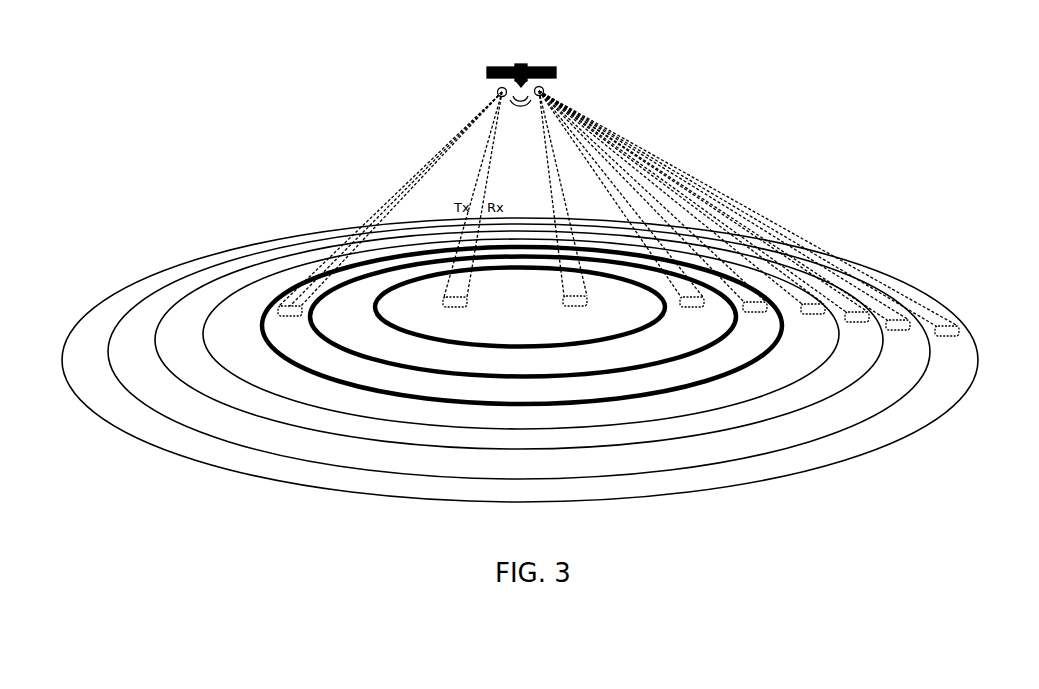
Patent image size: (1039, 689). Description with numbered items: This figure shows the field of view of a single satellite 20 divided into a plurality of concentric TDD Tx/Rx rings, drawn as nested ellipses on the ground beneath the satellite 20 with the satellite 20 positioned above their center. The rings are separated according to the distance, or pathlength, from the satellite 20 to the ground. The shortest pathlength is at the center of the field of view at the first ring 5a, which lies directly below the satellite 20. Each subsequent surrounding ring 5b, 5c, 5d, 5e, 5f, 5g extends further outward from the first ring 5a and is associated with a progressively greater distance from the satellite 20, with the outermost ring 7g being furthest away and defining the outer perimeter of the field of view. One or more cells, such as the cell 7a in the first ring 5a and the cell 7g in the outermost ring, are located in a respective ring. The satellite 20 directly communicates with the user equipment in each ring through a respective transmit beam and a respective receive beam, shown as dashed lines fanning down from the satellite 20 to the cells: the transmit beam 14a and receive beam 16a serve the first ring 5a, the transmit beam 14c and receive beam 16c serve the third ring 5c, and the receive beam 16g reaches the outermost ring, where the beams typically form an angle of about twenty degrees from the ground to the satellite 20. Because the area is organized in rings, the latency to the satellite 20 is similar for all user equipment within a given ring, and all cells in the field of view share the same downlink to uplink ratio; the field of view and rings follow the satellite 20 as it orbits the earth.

The satellite 20 is at (494, 62).
The first ring 5a is at (450, 337).
The second ring 5b is at (393, 362).
The third ring 5c is at (313, 372).
The fourth ring 5d is at (202, 335).
The fifth ring 5e is at (278, 250).
The sixth ring 5f is at (155, 295).
The seventh ring 5g is at (220, 255).
The cell 7a is at (468, 300).
The outermost ring cell 7g is at (955, 338).
The transmit beam 14a is at (556, 210).
The transmit beam 14c is at (400, 190).
The receive beam 16a is at (582, 282).
The receive beam 16c is at (372, 218).
The receive beam 16g is at (905, 297).